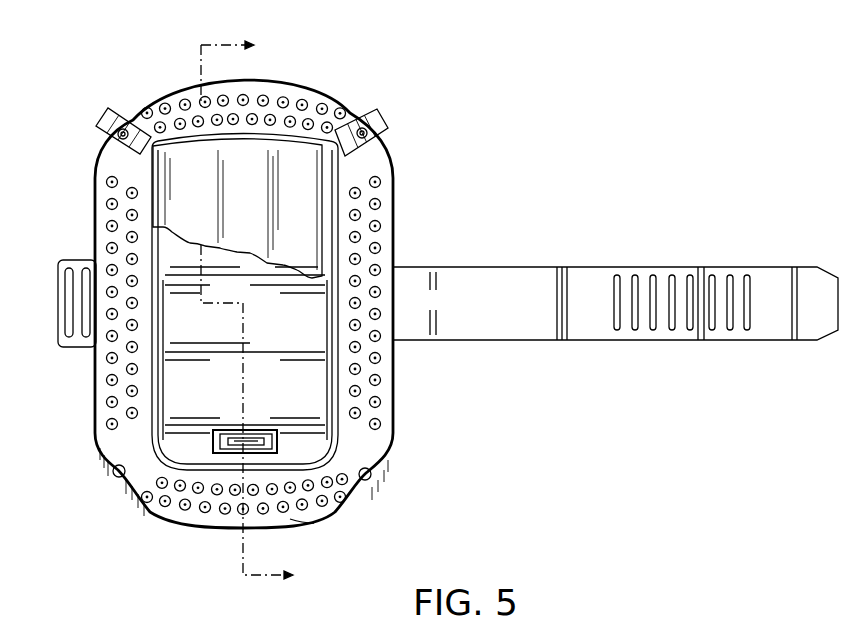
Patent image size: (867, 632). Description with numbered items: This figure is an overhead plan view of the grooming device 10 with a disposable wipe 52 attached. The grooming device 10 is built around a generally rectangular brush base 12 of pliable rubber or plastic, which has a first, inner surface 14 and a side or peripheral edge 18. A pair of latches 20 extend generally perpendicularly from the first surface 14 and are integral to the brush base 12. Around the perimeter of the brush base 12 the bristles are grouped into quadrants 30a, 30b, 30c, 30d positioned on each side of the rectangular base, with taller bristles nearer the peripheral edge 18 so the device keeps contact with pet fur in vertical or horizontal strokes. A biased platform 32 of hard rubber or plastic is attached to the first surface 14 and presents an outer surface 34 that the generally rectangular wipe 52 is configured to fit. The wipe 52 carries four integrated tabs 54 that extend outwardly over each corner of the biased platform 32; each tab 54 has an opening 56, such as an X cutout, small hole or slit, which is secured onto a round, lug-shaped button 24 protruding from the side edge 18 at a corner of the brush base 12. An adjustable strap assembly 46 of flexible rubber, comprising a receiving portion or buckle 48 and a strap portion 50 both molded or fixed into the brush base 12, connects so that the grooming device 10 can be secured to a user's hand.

The grooming device 10 is at (133, 53).
The brush base 12 is at (380, 415).
The first, inner surface 14 is at (367, 438).
The side or peripheral edge 18 is at (263, 453).
The latch 20 is at (303, 523).
The button 24 is at (117, 475).
The quadrant 30a is at (376, 248).
The quadrant 30b is at (248, 99).
The quadrant 30c is at (129, 392).
The quadrant 30d is at (185, 507).
The biased platform 32 is at (190, 336).
The outer surface 34 is at (280, 373).
The adjustable strap assembly 46 is at (567, 267).
The receiving portion or buckle 48 is at (72, 266).
The strap portion 50 is at (540, 317).
The wipe 52 is at (334, 197).
The tab 54 is at (105, 112).
The opening 56 is at (116, 137).